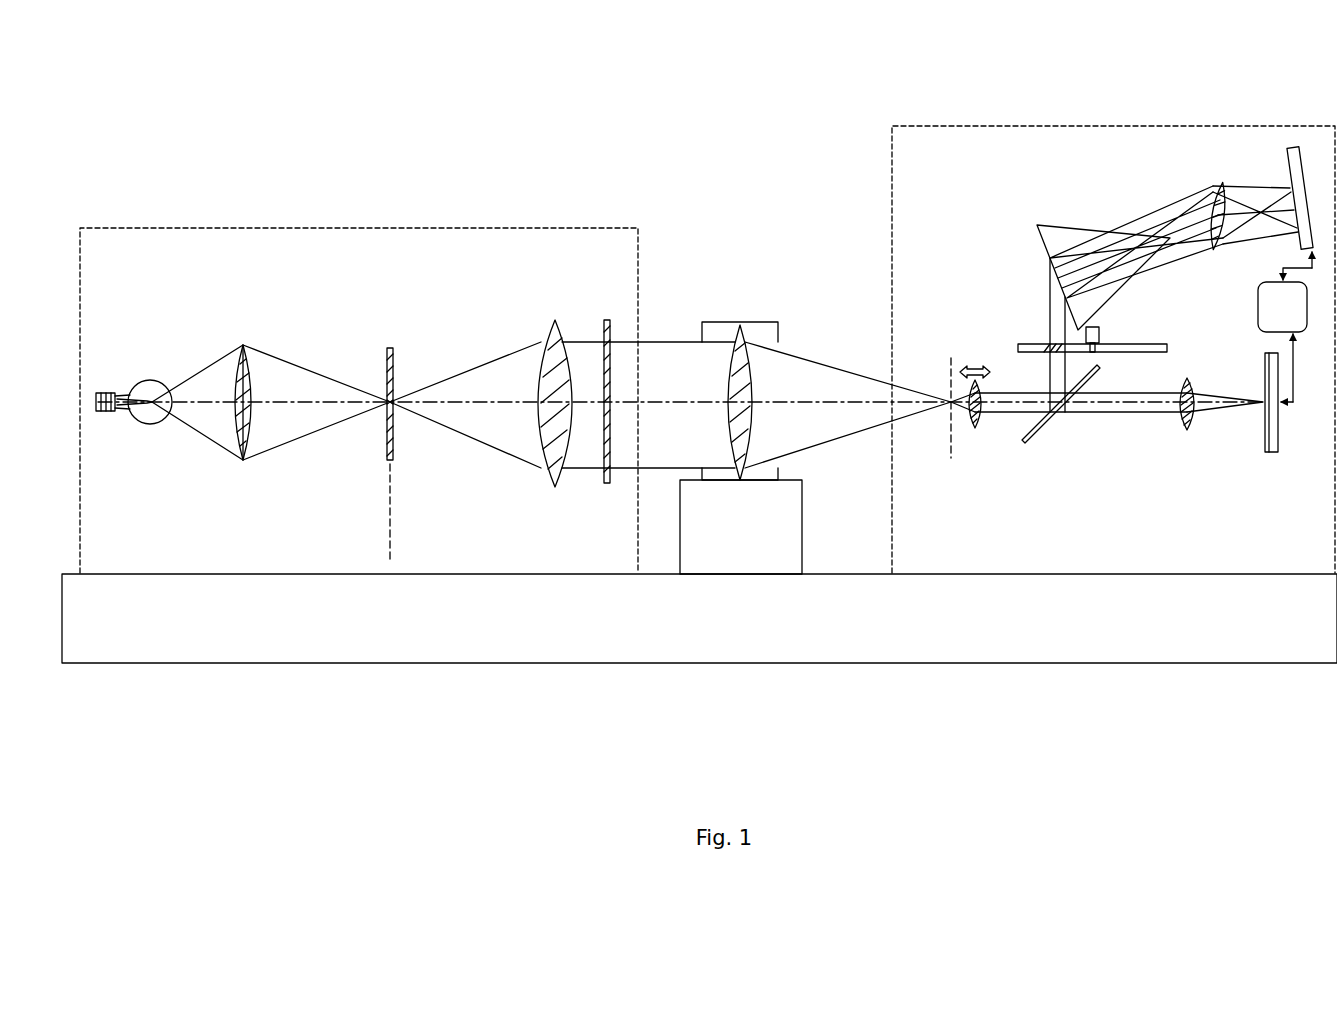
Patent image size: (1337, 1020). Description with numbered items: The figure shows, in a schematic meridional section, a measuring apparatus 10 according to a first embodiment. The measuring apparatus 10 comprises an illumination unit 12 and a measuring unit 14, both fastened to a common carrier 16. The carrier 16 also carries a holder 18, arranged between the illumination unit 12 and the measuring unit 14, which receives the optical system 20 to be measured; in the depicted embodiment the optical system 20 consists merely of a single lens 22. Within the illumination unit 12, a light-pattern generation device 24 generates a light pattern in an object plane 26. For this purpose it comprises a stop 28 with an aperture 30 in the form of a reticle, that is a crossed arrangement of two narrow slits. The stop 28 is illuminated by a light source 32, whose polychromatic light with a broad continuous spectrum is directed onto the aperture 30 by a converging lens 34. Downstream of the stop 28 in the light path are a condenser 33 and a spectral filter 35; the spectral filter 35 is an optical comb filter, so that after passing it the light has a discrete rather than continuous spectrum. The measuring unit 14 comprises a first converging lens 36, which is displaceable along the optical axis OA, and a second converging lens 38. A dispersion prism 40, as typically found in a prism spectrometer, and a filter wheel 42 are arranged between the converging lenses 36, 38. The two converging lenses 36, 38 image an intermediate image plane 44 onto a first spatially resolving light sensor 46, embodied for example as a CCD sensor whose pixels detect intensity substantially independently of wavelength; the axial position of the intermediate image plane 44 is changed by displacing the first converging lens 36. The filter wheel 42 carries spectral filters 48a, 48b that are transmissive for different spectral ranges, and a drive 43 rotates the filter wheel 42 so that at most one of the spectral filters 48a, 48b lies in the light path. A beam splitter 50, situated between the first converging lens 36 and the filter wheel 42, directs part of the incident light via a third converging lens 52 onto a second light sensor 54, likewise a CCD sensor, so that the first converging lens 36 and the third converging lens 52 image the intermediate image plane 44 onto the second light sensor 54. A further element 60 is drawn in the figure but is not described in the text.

The measuring apparatus 10 is at (512, 138).
The illumination unit 12 is at (570, 228).
The measuring unit 14 is at (892, 172).
The carrier 16 is at (614, 655).
The holder 18 is at (795, 523).
The optical system 20 is at (762, 322).
The lens 22 is at (735, 333).
The light-pattern generation device 24 is at (241, 306).
The object plane 26 is at (388, 502).
The stop 28 is at (388, 368).
The aperture 30 is at (394, 409).
The light source 32 is at (150, 427).
The condenser 33 is at (541, 345).
The converging lens 34 is at (258, 450).
The spectral filter 35 is at (607, 333).
The first converging lens 36 is at (979, 428).
The second converging lens 38 is at (1210, 193).
The dispersion prism 40 is at (1052, 228).
The filter wheel 42 is at (1142, 336).
The drive 43 is at (1100, 331).
The intermediate image plane 44 is at (946, 438).
The first spatially resolving light sensor 46 is at (1287, 168).
The spectral filter 48a is at (1032, 345).
The spectral filter 48b is at (1110, 353).
The beam splitter 50 is at (1032, 434).
The third converging lens 52 is at (1184, 426).
The second light sensor 54 is at (1263, 380).
The control unit 60 is at (1261, 294).
The optical axis OA is at (461, 400).